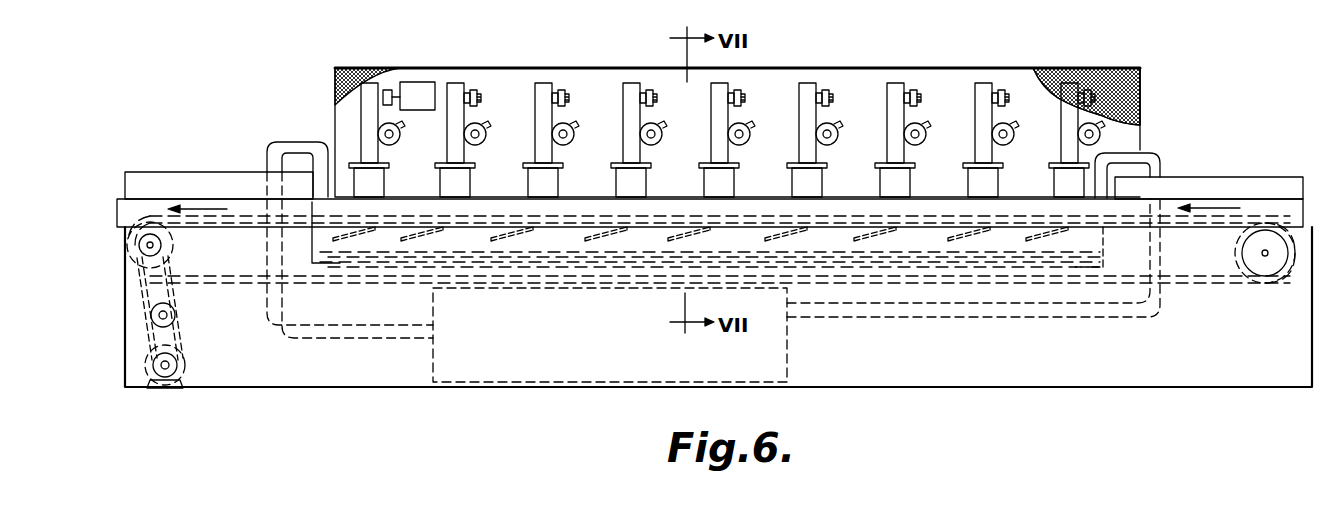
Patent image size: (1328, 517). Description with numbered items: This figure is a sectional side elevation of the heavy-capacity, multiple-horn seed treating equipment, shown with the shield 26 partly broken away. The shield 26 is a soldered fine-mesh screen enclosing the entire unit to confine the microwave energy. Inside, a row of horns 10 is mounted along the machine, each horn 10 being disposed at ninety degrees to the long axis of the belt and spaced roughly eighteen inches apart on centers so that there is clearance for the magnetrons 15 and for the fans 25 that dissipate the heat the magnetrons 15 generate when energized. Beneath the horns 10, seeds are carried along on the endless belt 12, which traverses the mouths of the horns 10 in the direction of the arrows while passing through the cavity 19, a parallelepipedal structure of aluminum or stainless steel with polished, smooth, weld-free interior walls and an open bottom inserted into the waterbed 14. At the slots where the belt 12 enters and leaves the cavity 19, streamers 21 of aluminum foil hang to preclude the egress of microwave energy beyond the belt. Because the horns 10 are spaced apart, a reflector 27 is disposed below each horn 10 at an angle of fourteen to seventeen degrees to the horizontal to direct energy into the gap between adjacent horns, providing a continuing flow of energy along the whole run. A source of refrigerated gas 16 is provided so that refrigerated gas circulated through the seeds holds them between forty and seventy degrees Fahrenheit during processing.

The horn 10 is at (632, 84).
The endless belt 12 is at (124, 257).
The waterbed 14 is at (928, 248).
The magnetron 15 is at (829, 90).
The source of refrigerated gas 16 is at (788, 377).
The cavity 19 is at (1077, 210).
The streamers 21 is at (340, 208).
The fans 25 is at (573, 131).
The shield 26 is at (1095, 50).
The reflector 27 is at (514, 233).